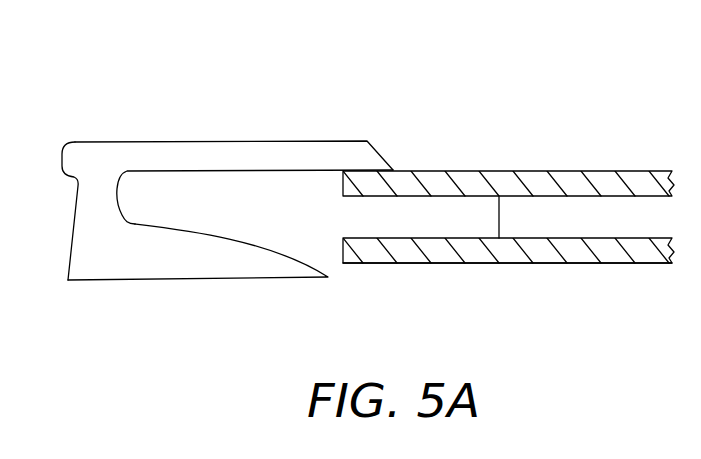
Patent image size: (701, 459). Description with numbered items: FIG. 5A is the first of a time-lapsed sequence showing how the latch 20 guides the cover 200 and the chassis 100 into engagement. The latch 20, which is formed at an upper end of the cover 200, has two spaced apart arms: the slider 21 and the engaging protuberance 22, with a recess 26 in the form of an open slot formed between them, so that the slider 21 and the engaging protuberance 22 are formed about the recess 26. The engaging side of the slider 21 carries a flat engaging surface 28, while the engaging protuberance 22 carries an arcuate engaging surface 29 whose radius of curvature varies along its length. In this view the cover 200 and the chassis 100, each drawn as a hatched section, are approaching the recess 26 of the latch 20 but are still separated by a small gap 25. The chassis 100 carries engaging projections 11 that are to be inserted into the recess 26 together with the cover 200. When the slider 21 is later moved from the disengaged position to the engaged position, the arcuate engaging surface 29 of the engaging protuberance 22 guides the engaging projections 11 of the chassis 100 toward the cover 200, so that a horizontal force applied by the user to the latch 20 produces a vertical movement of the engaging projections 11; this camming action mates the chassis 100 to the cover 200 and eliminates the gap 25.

The latch 20 is at (120, 265).
The slider 21 is at (270, 158).
The engaging protuberance 22 is at (227, 270).
The small gap 25 is at (499, 220).
The recess 26 is at (120, 202).
The flat engaging surface 28 is at (213, 173).
The arcuate engaging surface 29 is at (277, 245).
The engaging projection 11 is at (437, 265).
The chassis 100 is at (650, 261).
The cover 200 is at (655, 170).